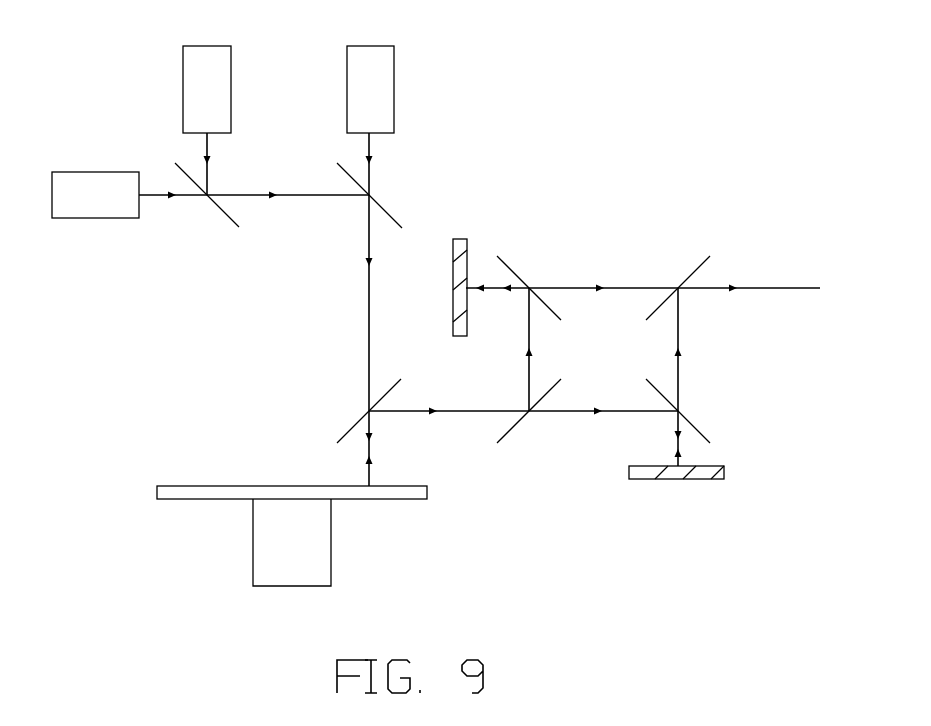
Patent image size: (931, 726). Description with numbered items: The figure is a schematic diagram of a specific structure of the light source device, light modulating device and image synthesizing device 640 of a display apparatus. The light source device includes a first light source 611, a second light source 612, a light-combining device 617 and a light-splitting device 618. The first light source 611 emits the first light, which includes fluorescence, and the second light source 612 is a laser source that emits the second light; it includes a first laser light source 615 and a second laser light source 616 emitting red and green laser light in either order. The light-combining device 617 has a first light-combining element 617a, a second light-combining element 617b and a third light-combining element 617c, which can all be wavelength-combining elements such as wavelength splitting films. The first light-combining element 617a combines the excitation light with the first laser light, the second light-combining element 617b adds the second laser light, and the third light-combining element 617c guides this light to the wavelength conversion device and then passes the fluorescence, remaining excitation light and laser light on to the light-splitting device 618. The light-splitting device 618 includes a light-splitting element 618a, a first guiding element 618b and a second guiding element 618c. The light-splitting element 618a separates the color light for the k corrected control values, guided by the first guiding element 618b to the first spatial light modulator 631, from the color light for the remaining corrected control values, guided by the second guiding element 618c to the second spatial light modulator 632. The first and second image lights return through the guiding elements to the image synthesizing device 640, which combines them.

The first light source 611 is at (95, 182).
The second light source 612 is at (292, 519).
The first laser light source 615 is at (207, 76).
The second laser light source 616 is at (370, 76).
The light-combining device 617 is at (273, 318).
The first light-combining element 617a is at (207, 206).
The second light-combining element 617b is at (360, 196).
The third light-combining element 617c is at (356, 411).
The light-splitting device 618 is at (538, 487).
The light-splitting element 618a is at (529, 426).
The first guiding element 618b is at (536, 286).
The second guiding element 618c is at (707, 411).
The first spatial light modulator 631 is at (457, 272).
The second spatial light modulator 632 is at (676, 488).
The image synthesizing device 640 is at (681, 274).